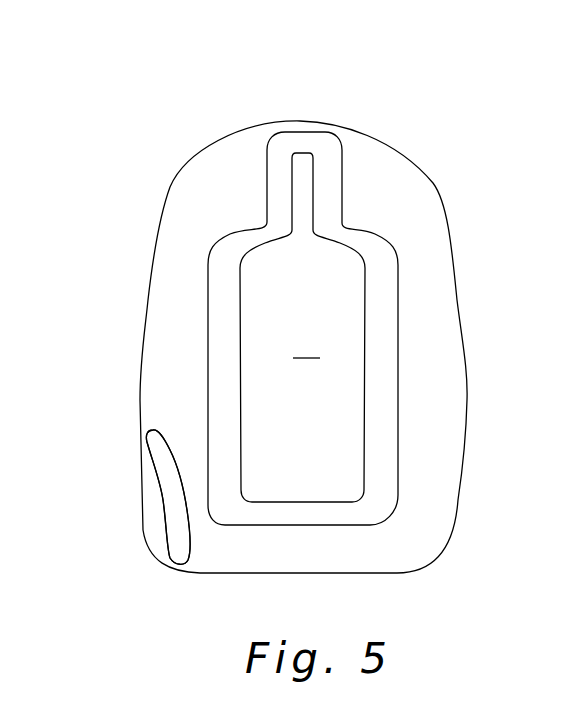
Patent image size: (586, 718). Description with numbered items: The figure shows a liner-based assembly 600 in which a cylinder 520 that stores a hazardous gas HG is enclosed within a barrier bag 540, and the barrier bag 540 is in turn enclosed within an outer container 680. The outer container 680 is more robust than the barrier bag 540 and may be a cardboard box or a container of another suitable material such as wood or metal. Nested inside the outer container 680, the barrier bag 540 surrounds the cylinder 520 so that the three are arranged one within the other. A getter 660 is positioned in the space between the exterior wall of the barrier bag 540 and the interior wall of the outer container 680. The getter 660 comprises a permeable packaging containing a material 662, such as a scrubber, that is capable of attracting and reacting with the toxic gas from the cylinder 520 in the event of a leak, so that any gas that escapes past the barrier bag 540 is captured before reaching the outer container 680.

The liner-based assembly 600 is at (437, 105).
The outer container 680 is at (458, 502).
The barrier bag 540 is at (398, 398).
The cylinder 520 is at (365, 335).
The getter 660 is at (149, 523).
The material 662 is at (160, 466).